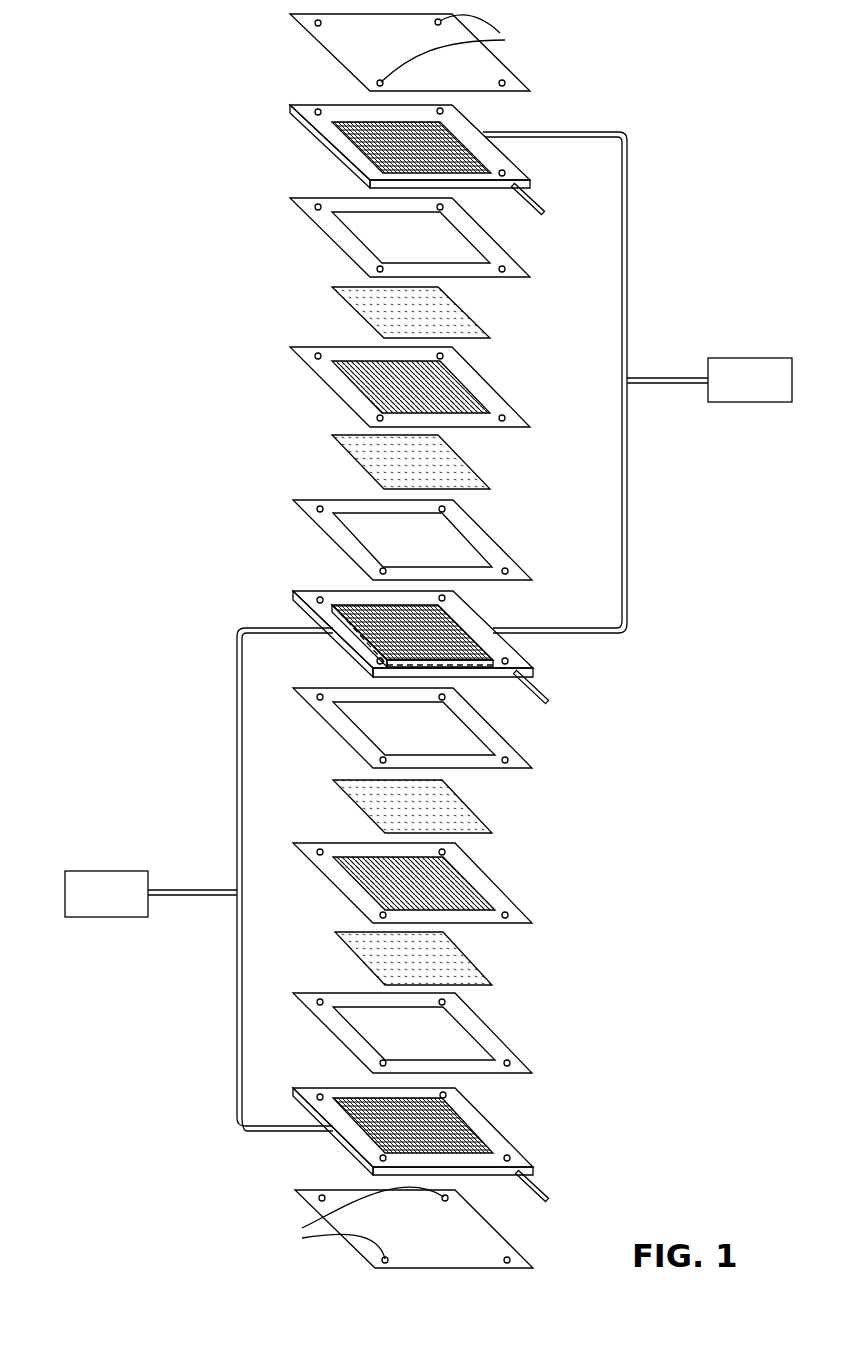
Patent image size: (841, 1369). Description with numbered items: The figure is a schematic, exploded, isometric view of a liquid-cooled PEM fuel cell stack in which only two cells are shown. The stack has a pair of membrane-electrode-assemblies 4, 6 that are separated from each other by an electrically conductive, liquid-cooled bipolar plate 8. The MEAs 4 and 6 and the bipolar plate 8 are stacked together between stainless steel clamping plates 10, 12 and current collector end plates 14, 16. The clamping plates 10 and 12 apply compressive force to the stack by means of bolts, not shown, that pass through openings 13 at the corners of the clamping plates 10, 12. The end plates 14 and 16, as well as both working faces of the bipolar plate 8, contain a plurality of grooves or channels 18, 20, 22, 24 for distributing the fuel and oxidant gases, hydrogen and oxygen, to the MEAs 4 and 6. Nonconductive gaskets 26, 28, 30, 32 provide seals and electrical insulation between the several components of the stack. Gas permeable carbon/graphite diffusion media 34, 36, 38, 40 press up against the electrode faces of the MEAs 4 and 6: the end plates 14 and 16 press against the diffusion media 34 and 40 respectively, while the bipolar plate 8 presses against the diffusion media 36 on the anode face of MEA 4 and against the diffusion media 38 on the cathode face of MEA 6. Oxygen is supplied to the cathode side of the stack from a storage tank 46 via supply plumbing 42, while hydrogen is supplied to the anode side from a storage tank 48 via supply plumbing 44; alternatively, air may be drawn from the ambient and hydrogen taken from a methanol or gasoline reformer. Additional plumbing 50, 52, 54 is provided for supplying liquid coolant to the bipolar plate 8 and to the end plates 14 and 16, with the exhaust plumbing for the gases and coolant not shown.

The membrane-electrode-assembly 4 is at (322, 383).
The membrane-electrode-assembly 6 is at (500, 868).
The bipolar plate 8 is at (376, 623).
The clamping plate 10 is at (330, 53).
The clamping plate 12 is at (518, 1236).
The openings 13 is at (402, 637).
The current collector end plate 14 is at (362, 146).
The current collector end plate 16 is at (449, 1131).
The grooves or channels 18 is at (353, 145).
The grooves or channels 20 is at (443, 620).
The grooves or channels 22 is at (355, 662).
The grooves or channels 24 is at (472, 1142).
The nonconductive gasket 26 is at (332, 228).
The nonconductive gasket 28 is at (332, 533).
The nonconductive gasket 30 is at (510, 747).
The nonconductive gasket 32 is at (490, 1032).
The carbon/graphite diffusion media 34 is at (362, 303).
The carbon/graphite diffusion media 36 is at (362, 457).
The carbon/graphite diffusion media 38 is at (457, 800).
The carbon/graphite diffusion media 40 is at (457, 962).
The supply plumbing 42 is at (627, 491).
The supply plumbing 44 is at (240, 967).
The storage tank 46 is at (777, 363).
The storage tank 48 is at (77, 877).
The coolant plumbing 50 is at (537, 200).
The coolant plumbing 52 is at (542, 692).
The coolant plumbing 54 is at (537, 1185).